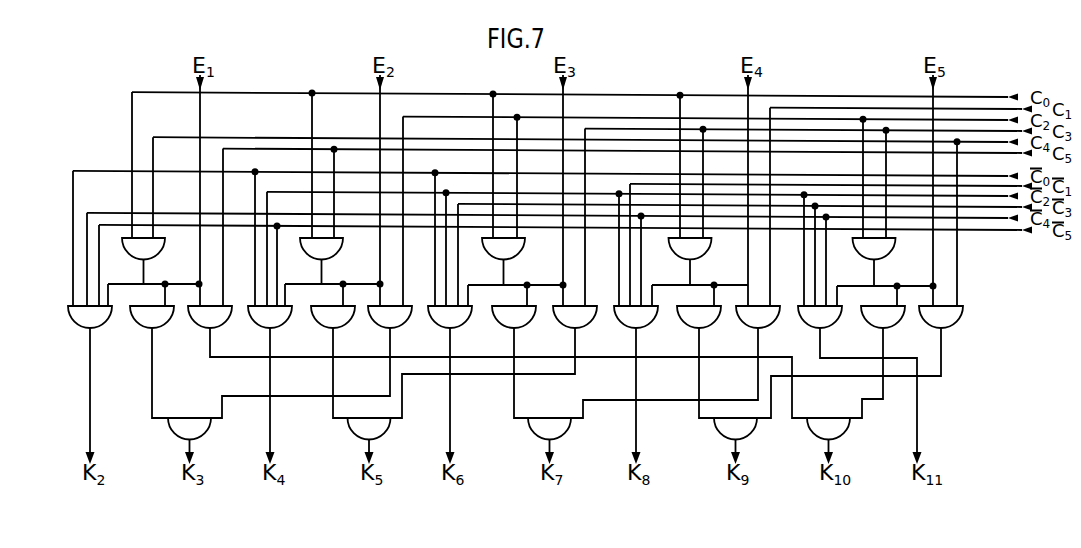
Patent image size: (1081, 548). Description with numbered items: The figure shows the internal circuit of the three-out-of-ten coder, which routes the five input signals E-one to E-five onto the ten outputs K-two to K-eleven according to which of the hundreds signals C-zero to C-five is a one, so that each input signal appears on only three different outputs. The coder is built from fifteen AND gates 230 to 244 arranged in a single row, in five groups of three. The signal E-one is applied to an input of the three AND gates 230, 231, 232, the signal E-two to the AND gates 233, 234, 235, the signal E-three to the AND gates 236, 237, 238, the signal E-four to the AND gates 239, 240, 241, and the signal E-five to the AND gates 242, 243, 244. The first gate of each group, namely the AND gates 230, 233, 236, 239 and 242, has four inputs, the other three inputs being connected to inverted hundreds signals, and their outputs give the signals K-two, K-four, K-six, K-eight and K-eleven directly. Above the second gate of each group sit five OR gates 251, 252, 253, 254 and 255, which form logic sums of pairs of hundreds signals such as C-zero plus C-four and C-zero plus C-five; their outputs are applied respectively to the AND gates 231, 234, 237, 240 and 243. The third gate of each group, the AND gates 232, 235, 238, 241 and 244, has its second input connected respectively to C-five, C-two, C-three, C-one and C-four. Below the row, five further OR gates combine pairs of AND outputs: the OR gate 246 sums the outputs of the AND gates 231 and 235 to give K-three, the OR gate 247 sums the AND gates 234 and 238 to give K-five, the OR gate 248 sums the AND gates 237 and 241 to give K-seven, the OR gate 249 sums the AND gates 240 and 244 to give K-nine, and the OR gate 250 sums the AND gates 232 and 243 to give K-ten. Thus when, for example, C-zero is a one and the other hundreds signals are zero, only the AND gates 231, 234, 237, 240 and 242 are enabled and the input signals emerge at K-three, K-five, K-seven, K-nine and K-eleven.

The AND gate 230 is at (80, 327).
The AND gate 231 is at (146, 327).
The AND gate 232 is at (191, 317).
The AND gate 233 is at (251, 317).
The AND gate 234 is at (314, 317).
The AND gate 235 is at (371, 317).
The AND gate 236 is at (431, 317).
The AND gate 237 is at (495, 317).
The AND gate 238 is at (556, 317).
The AND gate 239 is at (617, 317).
The AND gate 240 is at (680, 317).
The AND gate 241 is at (739, 317).
The AND gate 242 is at (801, 317).
The AND gate 243 is at (864, 317).
The AND gate 244 is at (922, 317).
The OR gate 246 is at (172, 436).
The OR gate 247 is at (352, 436).
The OR gate 248 is at (532, 436).
The OR gate 249 is at (718, 436).
The OR gate 250 is at (811, 436).
The OR gate 251 is at (162, 244).
The OR gate 252 is at (340, 244).
The OR gate 253 is at (522, 244).
The OR gate 254 is at (728, 257).
The OR gate 255 is at (893, 244).